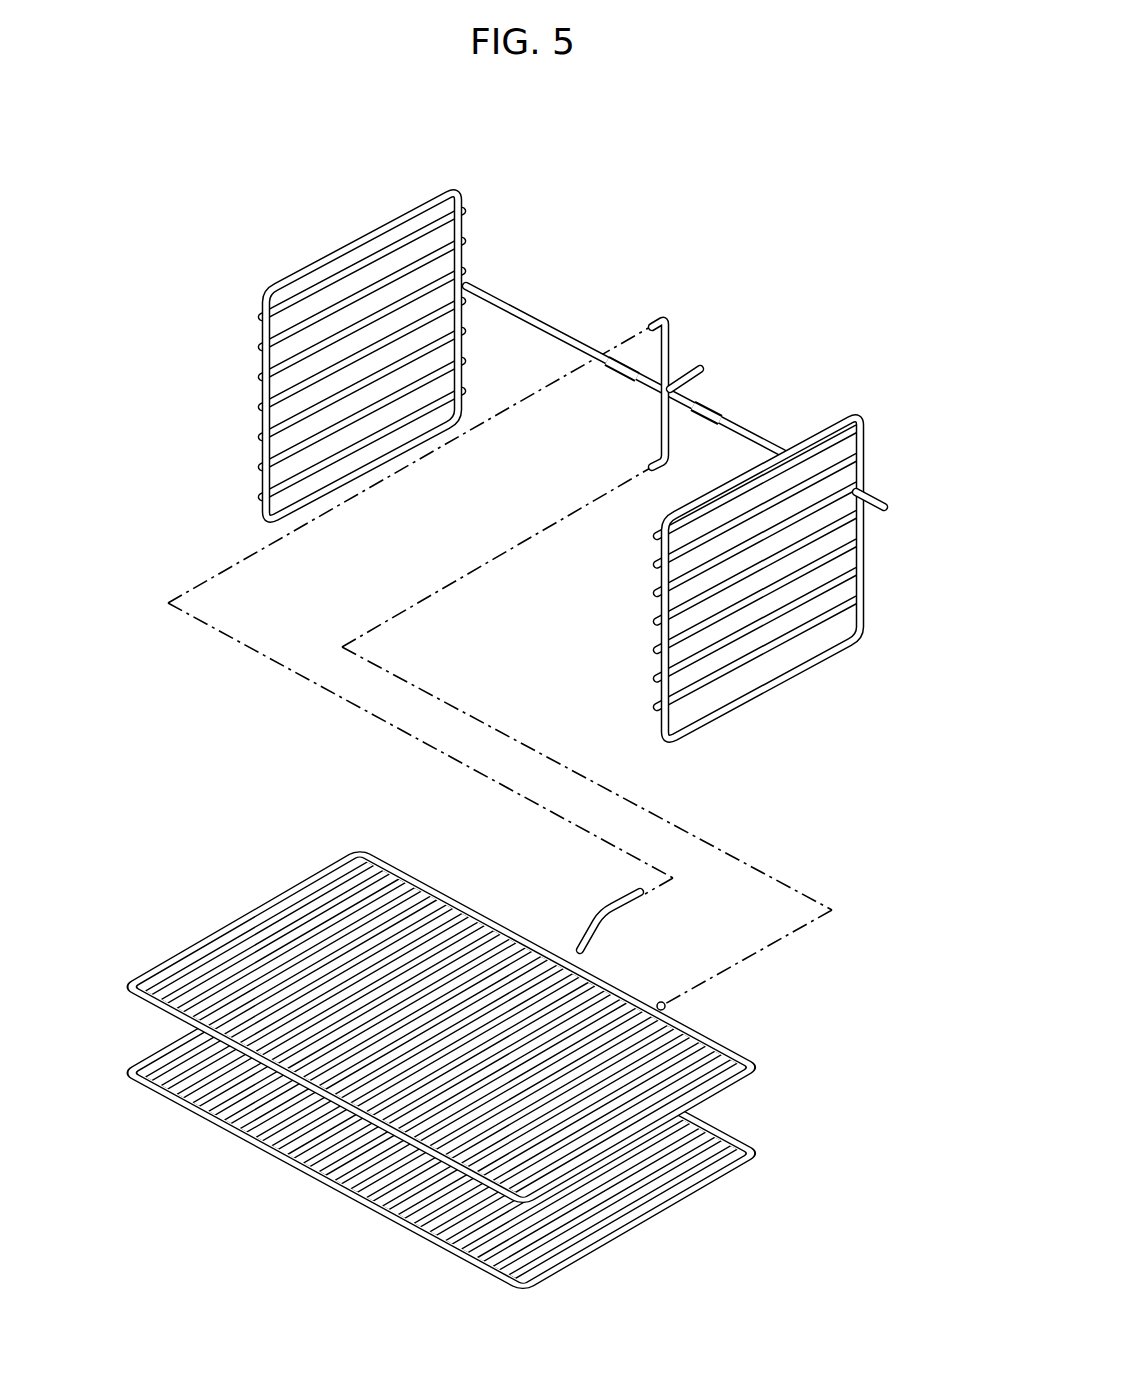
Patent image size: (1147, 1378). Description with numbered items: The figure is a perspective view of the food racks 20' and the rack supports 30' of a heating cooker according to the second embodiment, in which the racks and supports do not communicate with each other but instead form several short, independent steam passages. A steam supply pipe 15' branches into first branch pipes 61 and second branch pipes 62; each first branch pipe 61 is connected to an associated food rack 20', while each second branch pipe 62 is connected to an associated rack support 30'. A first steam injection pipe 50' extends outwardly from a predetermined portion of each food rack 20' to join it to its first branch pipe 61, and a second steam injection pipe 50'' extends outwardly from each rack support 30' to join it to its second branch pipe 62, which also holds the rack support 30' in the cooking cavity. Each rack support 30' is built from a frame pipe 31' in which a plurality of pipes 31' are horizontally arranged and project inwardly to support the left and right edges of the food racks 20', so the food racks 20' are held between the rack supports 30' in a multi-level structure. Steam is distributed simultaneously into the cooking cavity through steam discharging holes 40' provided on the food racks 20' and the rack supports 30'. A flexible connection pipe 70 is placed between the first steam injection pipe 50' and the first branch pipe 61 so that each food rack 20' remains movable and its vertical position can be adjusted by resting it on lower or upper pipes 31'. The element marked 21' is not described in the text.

The rack support 30' is at (301, 346).
The pipe 31' is at (350, 335).
The second steam injection pipe 50'' is at (624, 350).
The first branch pipe 61 is at (660, 318).
The second branch pipe 62 is at (687, 410).
The steam supply pipe 15' is at (735, 340).
The steam discharging hole 40' is at (611, 656).
The food rack 20' is at (420, 1059).
The bottom heater tube 21' is at (441, 1016).
The first steam injection pipe 50' is at (611, 907).
The connection pipe 70 is at (620, 910).